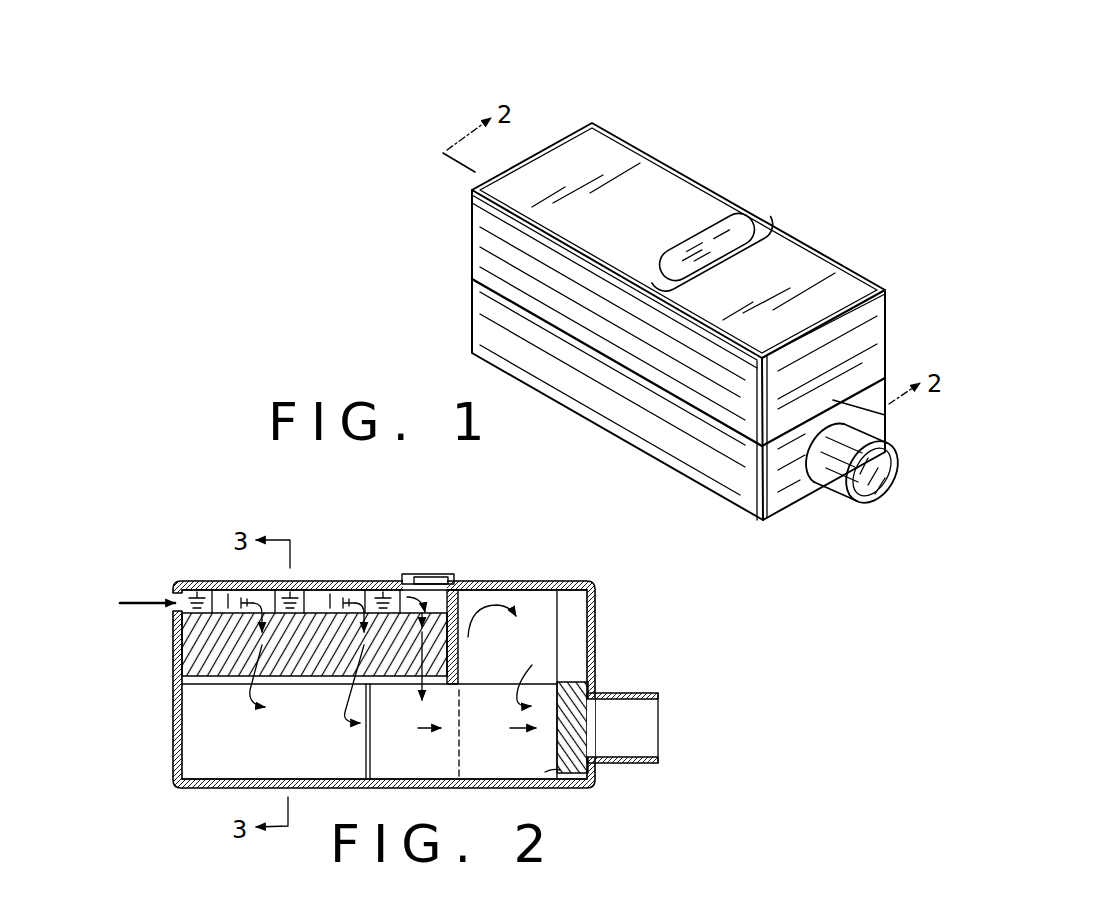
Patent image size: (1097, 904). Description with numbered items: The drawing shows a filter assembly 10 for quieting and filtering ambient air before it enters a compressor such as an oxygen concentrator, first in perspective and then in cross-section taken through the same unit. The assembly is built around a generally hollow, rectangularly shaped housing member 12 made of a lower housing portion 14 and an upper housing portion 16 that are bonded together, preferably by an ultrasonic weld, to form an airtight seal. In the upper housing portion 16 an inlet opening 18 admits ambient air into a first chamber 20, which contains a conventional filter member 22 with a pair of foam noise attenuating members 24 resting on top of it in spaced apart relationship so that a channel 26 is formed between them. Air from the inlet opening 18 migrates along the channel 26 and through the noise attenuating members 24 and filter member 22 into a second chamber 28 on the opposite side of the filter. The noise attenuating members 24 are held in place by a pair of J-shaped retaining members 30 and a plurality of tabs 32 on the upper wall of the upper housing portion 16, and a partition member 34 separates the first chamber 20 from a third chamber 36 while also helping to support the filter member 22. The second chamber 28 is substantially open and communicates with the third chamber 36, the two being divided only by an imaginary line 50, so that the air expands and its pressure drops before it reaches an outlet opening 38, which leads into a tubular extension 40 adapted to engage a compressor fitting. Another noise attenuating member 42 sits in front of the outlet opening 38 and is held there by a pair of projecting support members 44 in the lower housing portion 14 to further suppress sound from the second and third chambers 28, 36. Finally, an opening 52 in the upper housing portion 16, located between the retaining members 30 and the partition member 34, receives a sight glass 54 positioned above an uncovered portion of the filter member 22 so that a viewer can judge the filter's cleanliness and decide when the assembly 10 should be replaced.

In FIG. 1, the filter assembly 10 is at (762, 128).
In FIG. 2, the filter assembly 10 is at (137, 540).
In FIG. 1, the housing member 12 is at (468, 280).
In FIG. 2, the housing member 12 is at (175, 736).
In FIG. 1, the lower housing portion 14 is at (745, 503).
In FIG. 2, the lower housing portion 14 is at (210, 790).
In FIG. 1, the upper housing portion 16 is at (843, 287).
In FIG. 2, the upper housing portion 16 is at (597, 608).
In FIG. 2, the inlet opening 18 is at (170, 608).
In FIG. 2, the first chamber 20 is at (357, 593).
In FIG. 2, the filter member 22 is at (213, 652).
In FIG. 2, the noise attenuating members 24 is at (228, 592).
In FIG. 2, the channel 26 is at (559, 893).
In FIG. 2, the second chamber 28 is at (300, 768).
In FIG. 2, the J-shaped retaining members 30 is at (384, 586).
In FIG. 2, the projection members or tabs 32 is at (200, 600).
In FIG. 2, the partition member 34 is at (462, 665).
In FIG. 2, the third chamber 36 is at (518, 767).
In FIG. 2, the outlet opening 38 is at (591, 722).
In FIG. 1, the tubular extension 40 is at (887, 498).
In FIG. 2, the tubular extension 40 is at (647, 767).
In FIG. 2, the noise attenuating member 42 is at (597, 778).
In FIG. 2, the projecting support members 44 is at (545, 772).
In FIG. 2, the imaginary line 50 is at (457, 760).
In FIG. 2, the opening 52 is at (430, 593).
In FIG. 1, the sight glass 54 is at (757, 227).
In FIG. 2, the sight glass 54 is at (425, 576).